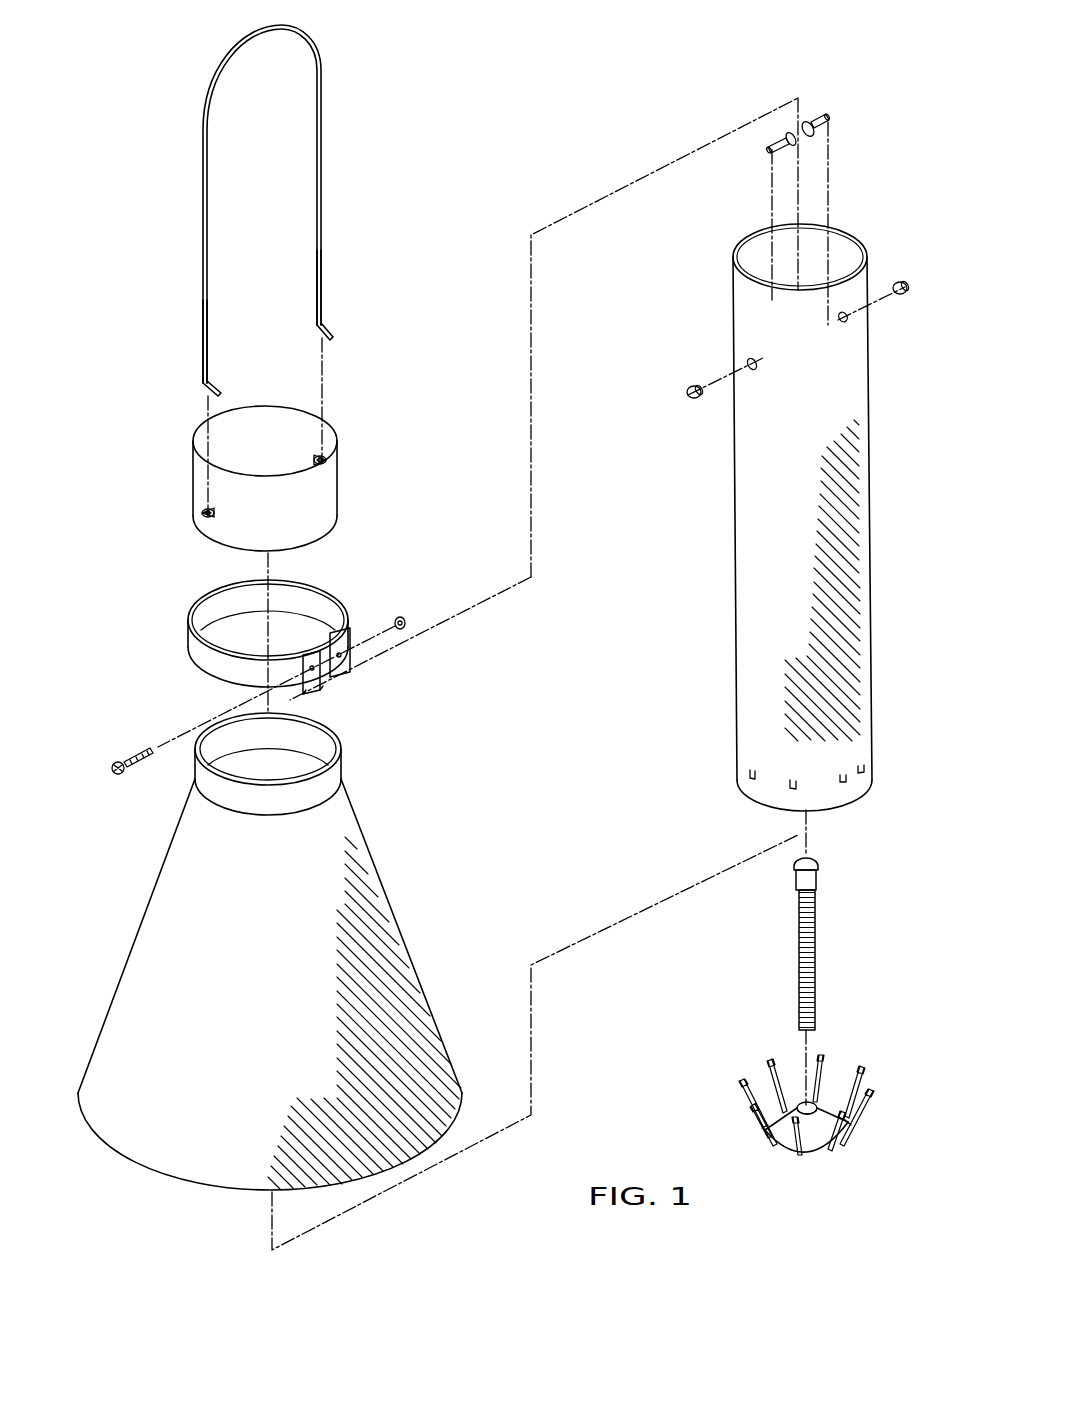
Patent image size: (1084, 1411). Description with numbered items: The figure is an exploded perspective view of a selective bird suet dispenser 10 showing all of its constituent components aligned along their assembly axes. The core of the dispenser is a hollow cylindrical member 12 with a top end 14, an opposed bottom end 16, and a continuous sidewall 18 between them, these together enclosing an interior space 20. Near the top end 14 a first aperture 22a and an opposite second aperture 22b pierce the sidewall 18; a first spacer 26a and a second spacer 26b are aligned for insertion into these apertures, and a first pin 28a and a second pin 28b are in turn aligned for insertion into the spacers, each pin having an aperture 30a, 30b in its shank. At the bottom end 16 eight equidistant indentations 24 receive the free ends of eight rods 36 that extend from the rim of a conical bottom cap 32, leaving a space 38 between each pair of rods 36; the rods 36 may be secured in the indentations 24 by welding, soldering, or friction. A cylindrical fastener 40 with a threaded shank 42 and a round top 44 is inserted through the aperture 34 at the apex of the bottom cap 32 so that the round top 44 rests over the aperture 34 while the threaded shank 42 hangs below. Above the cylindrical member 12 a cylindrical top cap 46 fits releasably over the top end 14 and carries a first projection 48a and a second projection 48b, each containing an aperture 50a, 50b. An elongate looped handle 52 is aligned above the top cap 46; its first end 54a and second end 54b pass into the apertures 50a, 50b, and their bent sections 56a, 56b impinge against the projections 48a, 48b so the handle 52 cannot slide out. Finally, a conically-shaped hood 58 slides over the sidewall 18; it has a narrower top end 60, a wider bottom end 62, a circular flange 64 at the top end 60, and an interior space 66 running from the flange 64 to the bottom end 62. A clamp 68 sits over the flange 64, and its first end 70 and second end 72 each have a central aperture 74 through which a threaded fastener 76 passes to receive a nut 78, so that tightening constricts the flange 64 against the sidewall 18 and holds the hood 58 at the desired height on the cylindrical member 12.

The selective bird suet dispenser 10 is at (470, 270).
The cylindrical member 12 is at (872, 463).
The top end 14 is at (838, 240).
The bottom end 16 is at (856, 804).
The continuous sidewall 18 is at (866, 551).
The interior space 20 is at (866, 244).
The first aperture 22a is at (748, 360).
The second aperture 22b is at (845, 324).
The indentations 24 is at (752, 776).
The first spacer 26a is at (686, 396).
The second spacer 26b is at (905, 284).
The first pin 28a is at (782, 131).
The second pin 28b is at (809, 124).
The aperture of first pin 30a is at (771, 142).
The aperture of second pin 30b is at (827, 117).
The bottom cap 32 is at (785, 1151).
The aperture of bottom cap 34 is at (813, 1130).
The rods 36 is at (768, 1058).
The space 38 is at (833, 1080).
The cylindrical fastener 40 is at (815, 913).
The threaded shank 42 is at (815, 941).
The round top 44 is at (809, 857).
The top cap 46 is at (252, 410).
The first projection 48a is at (225, 516).
The second projection 48b is at (312, 458).
The aperture of first projection 50a is at (204, 511).
The aperture of second projection 50b is at (326, 440).
The looped handle 52 is at (220, 79).
The first end of handle 54a is at (203, 341).
The second end of handle 54b is at (325, 298).
The first bent section 56a is at (205, 388).
The second bent section 56b is at (331, 338).
The conically-shaped hood 58 is at (405, 934).
The top end of hood 60 is at (345, 803).
The bottom end of hood 62 is at (466, 1086).
The circular flange 64 is at (340, 758).
The interior space of hood 66 is at (214, 722).
The clamp 68 is at (306, 592).
The first end of clamp 70 is at (308, 658).
The second end of clamp 72 is at (346, 636).
The aperture of clamp end 74 is at (322, 689).
The threaded fastener 76 is at (112, 773).
The nut 78 is at (407, 618).